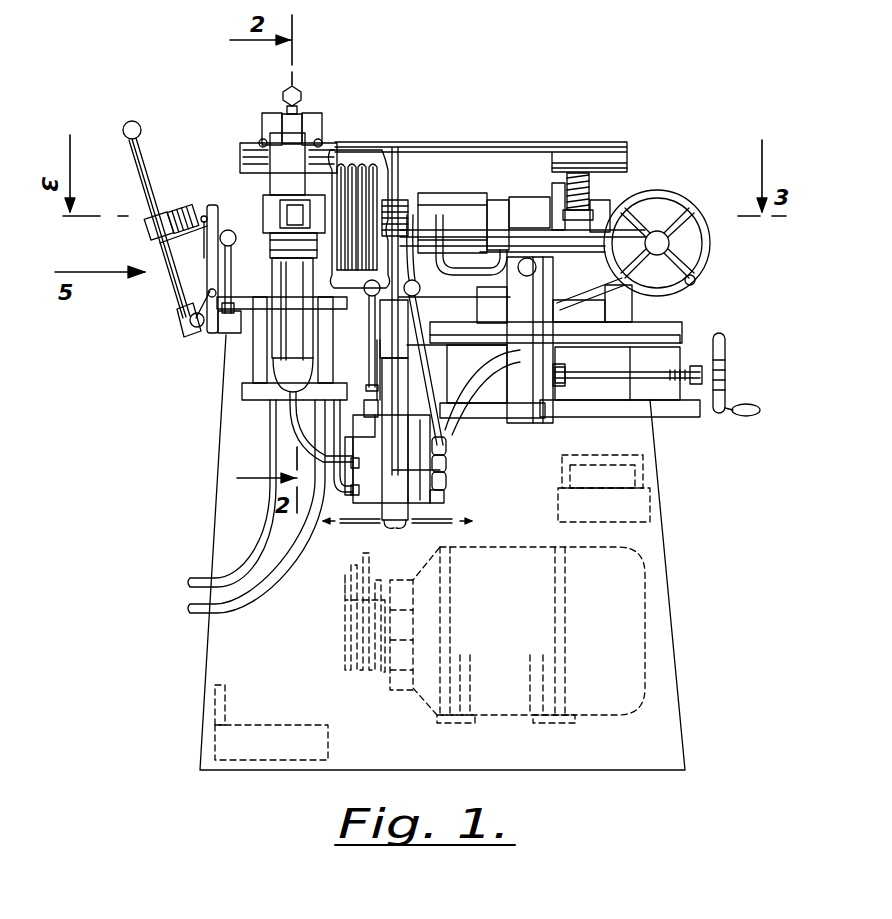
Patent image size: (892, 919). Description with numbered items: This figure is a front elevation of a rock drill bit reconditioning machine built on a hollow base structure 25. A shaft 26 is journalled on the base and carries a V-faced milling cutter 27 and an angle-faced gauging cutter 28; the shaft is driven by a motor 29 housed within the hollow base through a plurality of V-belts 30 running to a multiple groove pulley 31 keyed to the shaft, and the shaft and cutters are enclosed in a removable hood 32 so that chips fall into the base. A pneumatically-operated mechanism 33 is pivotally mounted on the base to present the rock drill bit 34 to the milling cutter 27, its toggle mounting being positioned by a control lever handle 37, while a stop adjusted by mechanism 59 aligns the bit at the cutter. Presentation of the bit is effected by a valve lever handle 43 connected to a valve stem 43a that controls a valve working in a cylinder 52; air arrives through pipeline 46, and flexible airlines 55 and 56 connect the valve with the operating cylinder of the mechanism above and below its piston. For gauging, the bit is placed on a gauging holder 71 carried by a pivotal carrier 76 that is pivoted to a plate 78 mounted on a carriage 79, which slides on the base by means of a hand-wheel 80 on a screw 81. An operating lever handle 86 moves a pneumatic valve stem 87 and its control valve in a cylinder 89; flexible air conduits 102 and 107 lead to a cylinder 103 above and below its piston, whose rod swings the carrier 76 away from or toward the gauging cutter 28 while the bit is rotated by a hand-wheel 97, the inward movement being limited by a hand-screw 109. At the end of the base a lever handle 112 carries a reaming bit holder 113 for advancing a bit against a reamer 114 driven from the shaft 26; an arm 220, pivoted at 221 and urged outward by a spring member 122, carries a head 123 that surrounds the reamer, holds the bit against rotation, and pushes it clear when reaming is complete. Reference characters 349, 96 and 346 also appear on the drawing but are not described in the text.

The hollow base structure 25 is at (665, 538).
The motor 29 is at (628, 716).
The V-belts 30 is at (374, 676).
The multiple groove pulley 31 is at (380, 175).
The shaft 26 is at (387, 212).
The gauging holder 71 is at (524, 200).
The bracket 349 is at (560, 200).
The removable hood 32 is at (573, 148).
The angle-faced gauging cutter 28 is at (592, 192).
The coupling 96 is at (592, 218).
The hand-wheel 97 is at (712, 250).
The hand-screw 109 is at (523, 236).
The carrier 76 is at (576, 298).
The operating lever handle 86 is at (414, 332).
The plate 78 is at (665, 328).
The carriage 79 is at (650, 357).
The screw 81 is at (658, 376).
The hand-wheel 80 is at (727, 385).
The cylinder 103 is at (558, 372).
The flexible air conduit 102 is at (508, 368).
The flexible air conduit 107 is at (500, 395).
The pneumatic valve stem 87 is at (446, 430).
The cylinder 89 is at (446, 471).
The valve lever handle 43 is at (376, 310).
The valve stem 43a is at (368, 390).
The cylinder 52 is at (370, 493).
The pipeline 46 is at (444, 519).
The flexible airline 56 is at (318, 407).
The flexible airline 55 is at (335, 420).
The adjusting mechanism 59 is at (290, 130).
The V-faced milling cutter 27 is at (280, 200).
The rock drill bit 34 is at (283, 208).
The pneumatically-operated mechanism 33 is at (285, 352).
The control lever handle 37 is at (233, 262).
The spring member 122 is at (206, 332).
The head 123 is at (180, 208).
The reaming bit holder 113 is at (150, 222).
The pad 346 is at (178, 208).
The lever handle 112 is at (160, 242).
The reamer 114 is at (208, 258).
The arm 220 is at (208, 290).
The pivot 221 is at (200, 308).